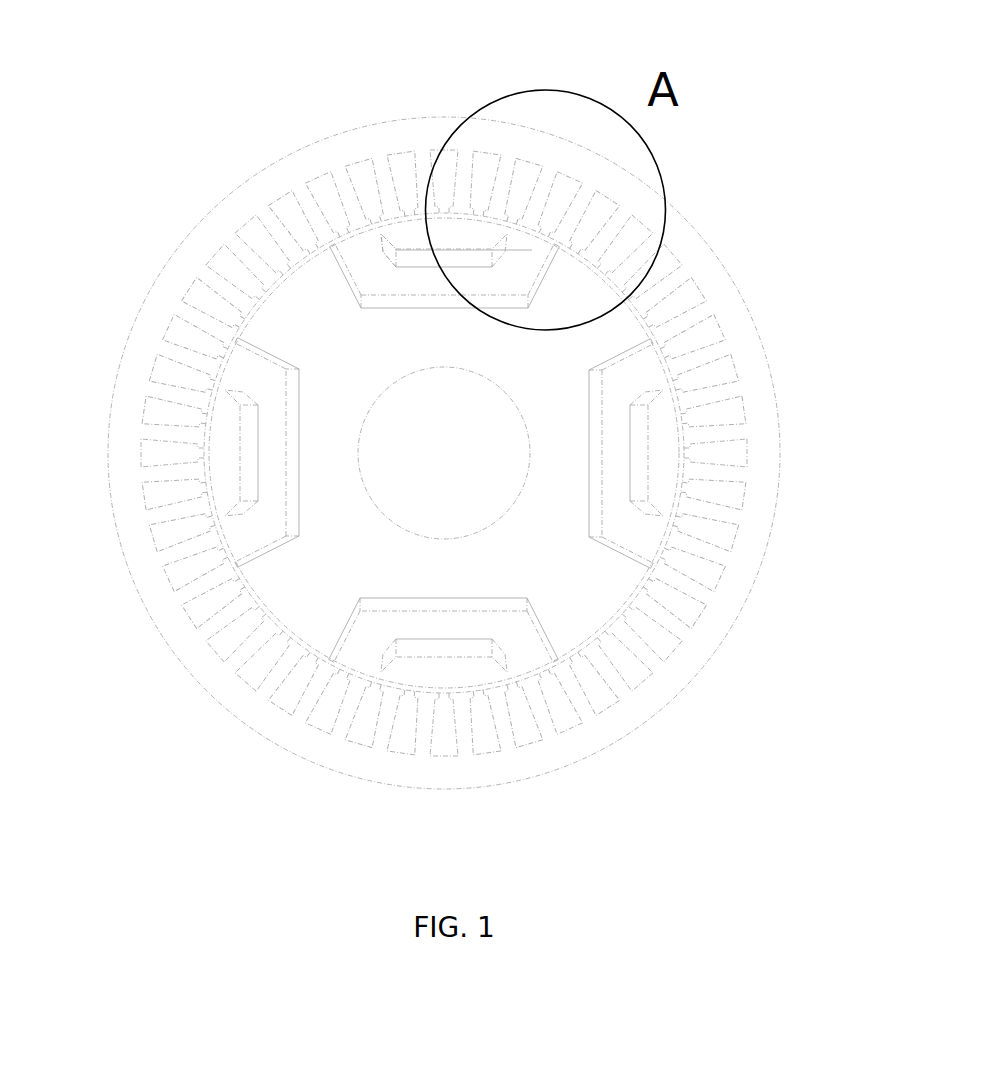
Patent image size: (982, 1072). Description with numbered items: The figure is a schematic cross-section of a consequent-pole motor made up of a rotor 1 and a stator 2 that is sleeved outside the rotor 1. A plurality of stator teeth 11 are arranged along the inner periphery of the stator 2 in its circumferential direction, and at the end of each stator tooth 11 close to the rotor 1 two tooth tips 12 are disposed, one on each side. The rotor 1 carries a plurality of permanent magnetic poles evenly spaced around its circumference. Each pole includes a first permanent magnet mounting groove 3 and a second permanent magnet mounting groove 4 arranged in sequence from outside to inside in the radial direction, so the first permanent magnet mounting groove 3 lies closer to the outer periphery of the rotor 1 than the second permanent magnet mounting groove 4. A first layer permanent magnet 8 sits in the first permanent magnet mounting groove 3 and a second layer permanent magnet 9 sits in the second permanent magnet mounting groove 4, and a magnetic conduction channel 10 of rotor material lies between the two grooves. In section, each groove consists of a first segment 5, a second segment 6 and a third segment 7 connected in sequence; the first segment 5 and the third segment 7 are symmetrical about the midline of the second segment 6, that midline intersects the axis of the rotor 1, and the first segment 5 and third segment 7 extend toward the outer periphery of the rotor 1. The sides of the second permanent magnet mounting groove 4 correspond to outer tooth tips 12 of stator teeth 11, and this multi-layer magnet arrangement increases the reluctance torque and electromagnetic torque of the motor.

The rotor 1 is at (295, 597).
The stator 2 is at (708, 257).
The first permanent magnet mounting groove 3 is at (661, 446).
The second permanent magnet mounting groove 4 is at (616, 398).
The first segment 5 is at (395, 248).
The second segment 6 is at (462, 249).
The third segment 7 is at (532, 250).
The first layer permanent magnet 8 is at (252, 455).
The second layer permanent magnet 9 is at (293, 482).
The magnetic conduction channel 10 is at (734, 397).
The stator teeth 11 is at (717, 512).
The tooth tips 12 is at (347, 682).